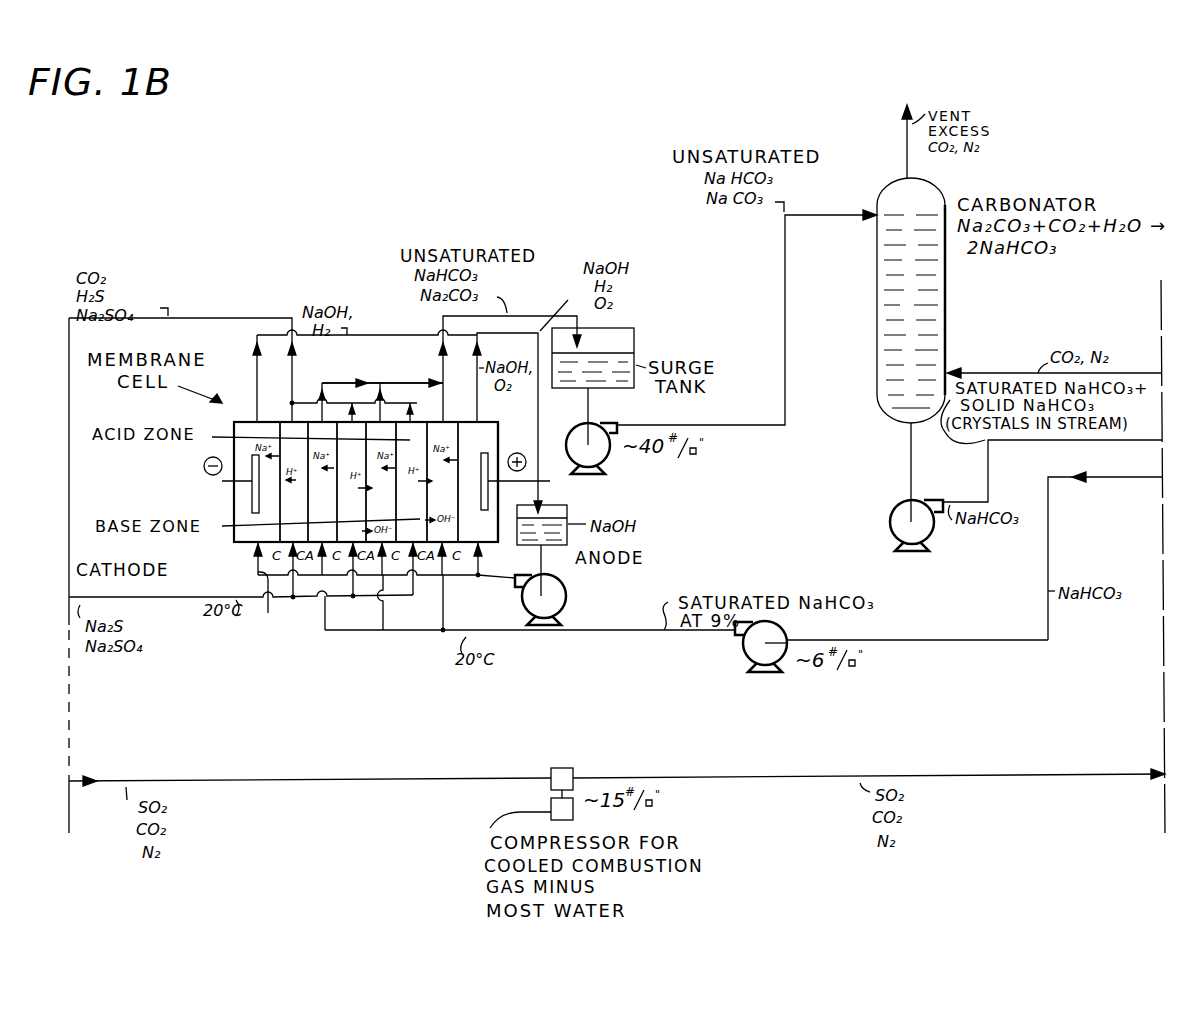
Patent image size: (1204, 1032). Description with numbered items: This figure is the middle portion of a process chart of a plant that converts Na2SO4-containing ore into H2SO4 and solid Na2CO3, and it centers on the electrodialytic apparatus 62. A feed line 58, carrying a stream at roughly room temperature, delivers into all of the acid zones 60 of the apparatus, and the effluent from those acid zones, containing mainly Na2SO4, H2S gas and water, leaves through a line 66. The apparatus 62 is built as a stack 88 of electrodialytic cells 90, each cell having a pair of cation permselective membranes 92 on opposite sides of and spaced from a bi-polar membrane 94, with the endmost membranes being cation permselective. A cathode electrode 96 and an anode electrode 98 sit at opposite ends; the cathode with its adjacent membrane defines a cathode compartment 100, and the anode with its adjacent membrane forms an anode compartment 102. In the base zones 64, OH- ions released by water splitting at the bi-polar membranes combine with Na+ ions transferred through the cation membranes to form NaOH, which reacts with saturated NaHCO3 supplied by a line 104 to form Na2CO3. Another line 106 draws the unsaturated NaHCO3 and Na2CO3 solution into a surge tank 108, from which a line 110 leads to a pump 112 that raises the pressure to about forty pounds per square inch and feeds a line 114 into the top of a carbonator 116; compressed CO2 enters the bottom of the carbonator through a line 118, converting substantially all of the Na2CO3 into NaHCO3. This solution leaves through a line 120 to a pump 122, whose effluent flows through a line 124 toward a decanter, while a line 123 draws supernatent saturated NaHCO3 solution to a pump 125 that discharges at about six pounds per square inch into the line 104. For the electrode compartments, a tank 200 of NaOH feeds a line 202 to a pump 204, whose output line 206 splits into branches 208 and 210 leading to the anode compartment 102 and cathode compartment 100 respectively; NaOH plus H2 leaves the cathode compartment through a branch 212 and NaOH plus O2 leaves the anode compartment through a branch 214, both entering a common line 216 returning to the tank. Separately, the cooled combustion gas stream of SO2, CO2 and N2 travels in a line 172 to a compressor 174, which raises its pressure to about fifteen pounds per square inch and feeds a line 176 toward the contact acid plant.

The line 58 is at (170, 600).
The acid zones 60 is at (422, 514).
The electrodialytic apparatus 62 is at (368, 368).
The base zones 64 is at (451, 514).
The line 66 is at (255, 317).
The stack 88 is at (502, 421).
The electrodialytic cells 90 is at (402, 592).
The cation permselective membranes 92 is at (290, 420).
The bi-polar membrane 94 is at (420, 422).
The cathode electrode 96 is at (252, 492).
The anode electrode 98 is at (490, 457).
The cathode compartment 100 is at (244, 548).
The anode compartment 102 is at (606, 505).
The line 104 is at (641, 632).
The line 106 is at (390, 368).
The surge tank 108 is at (636, 335).
The line 110 is at (590, 407).
The pump 112 is at (611, 463).
The line 114 is at (784, 274).
The carbonator 116 is at (877, 312).
The line 118 is at (1000, 370).
The line 120 is at (908, 463).
The pump 122 is at (886, 506).
The line 123 is at (1010, 622).
The line 124 is at (1062, 474).
The pump 125 is at (748, 647).
The line 172 is at (380, 782).
The compressor 174 is at (569, 768).
The line 176 is at (746, 780).
The tank 200 is at (568, 510).
The line 202 is at (562, 585).
The pump 204 is at (560, 614).
The line 206 is at (497, 586).
The branch 208 is at (472, 618).
The branch 210 is at (280, 606).
The branch 212 is at (256, 356).
The branch 214 is at (478, 379).
The common line 216 is at (512, 330).